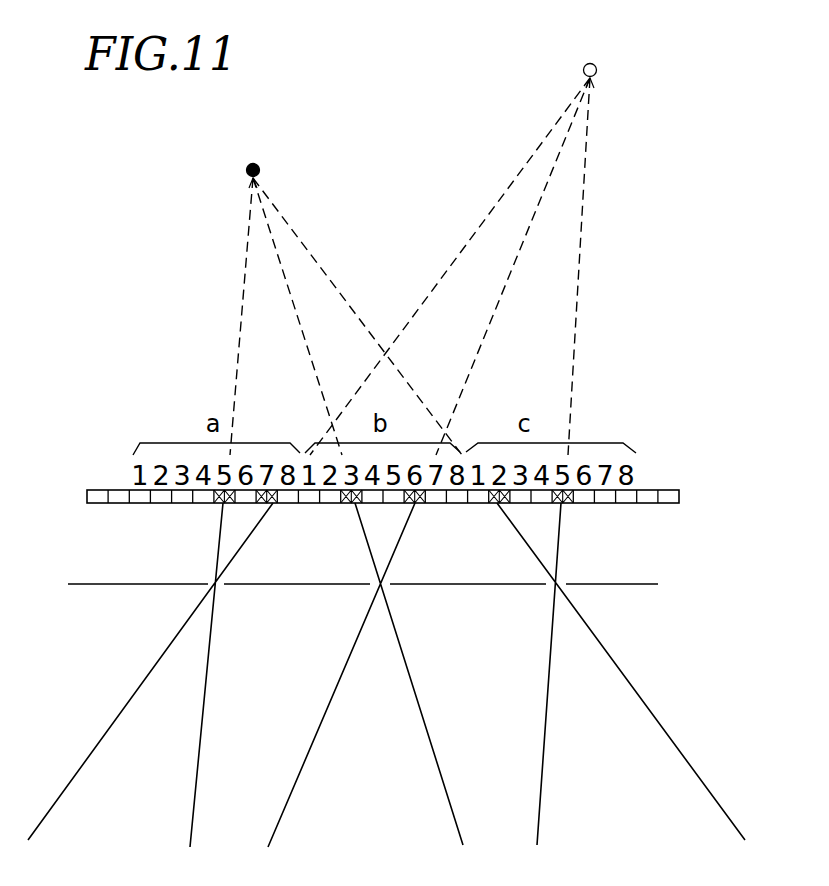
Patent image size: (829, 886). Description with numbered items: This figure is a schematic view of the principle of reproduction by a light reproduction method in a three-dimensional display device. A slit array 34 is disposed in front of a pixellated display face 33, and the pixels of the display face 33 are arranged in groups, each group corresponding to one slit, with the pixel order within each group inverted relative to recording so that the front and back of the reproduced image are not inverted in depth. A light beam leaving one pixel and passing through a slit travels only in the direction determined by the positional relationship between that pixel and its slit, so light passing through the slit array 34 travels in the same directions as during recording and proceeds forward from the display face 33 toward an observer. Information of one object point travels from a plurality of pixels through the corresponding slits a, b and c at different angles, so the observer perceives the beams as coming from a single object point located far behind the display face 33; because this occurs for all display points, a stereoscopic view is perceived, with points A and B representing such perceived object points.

The pixellated display face 33 is at (679, 497).
The slit array 34 is at (658, 584).
The point source A is at (253, 154).
The point source B is at (590, 54).
The slit a is at (150, 675).
The slit b is at (365, 675).
The slit c is at (621, 674).